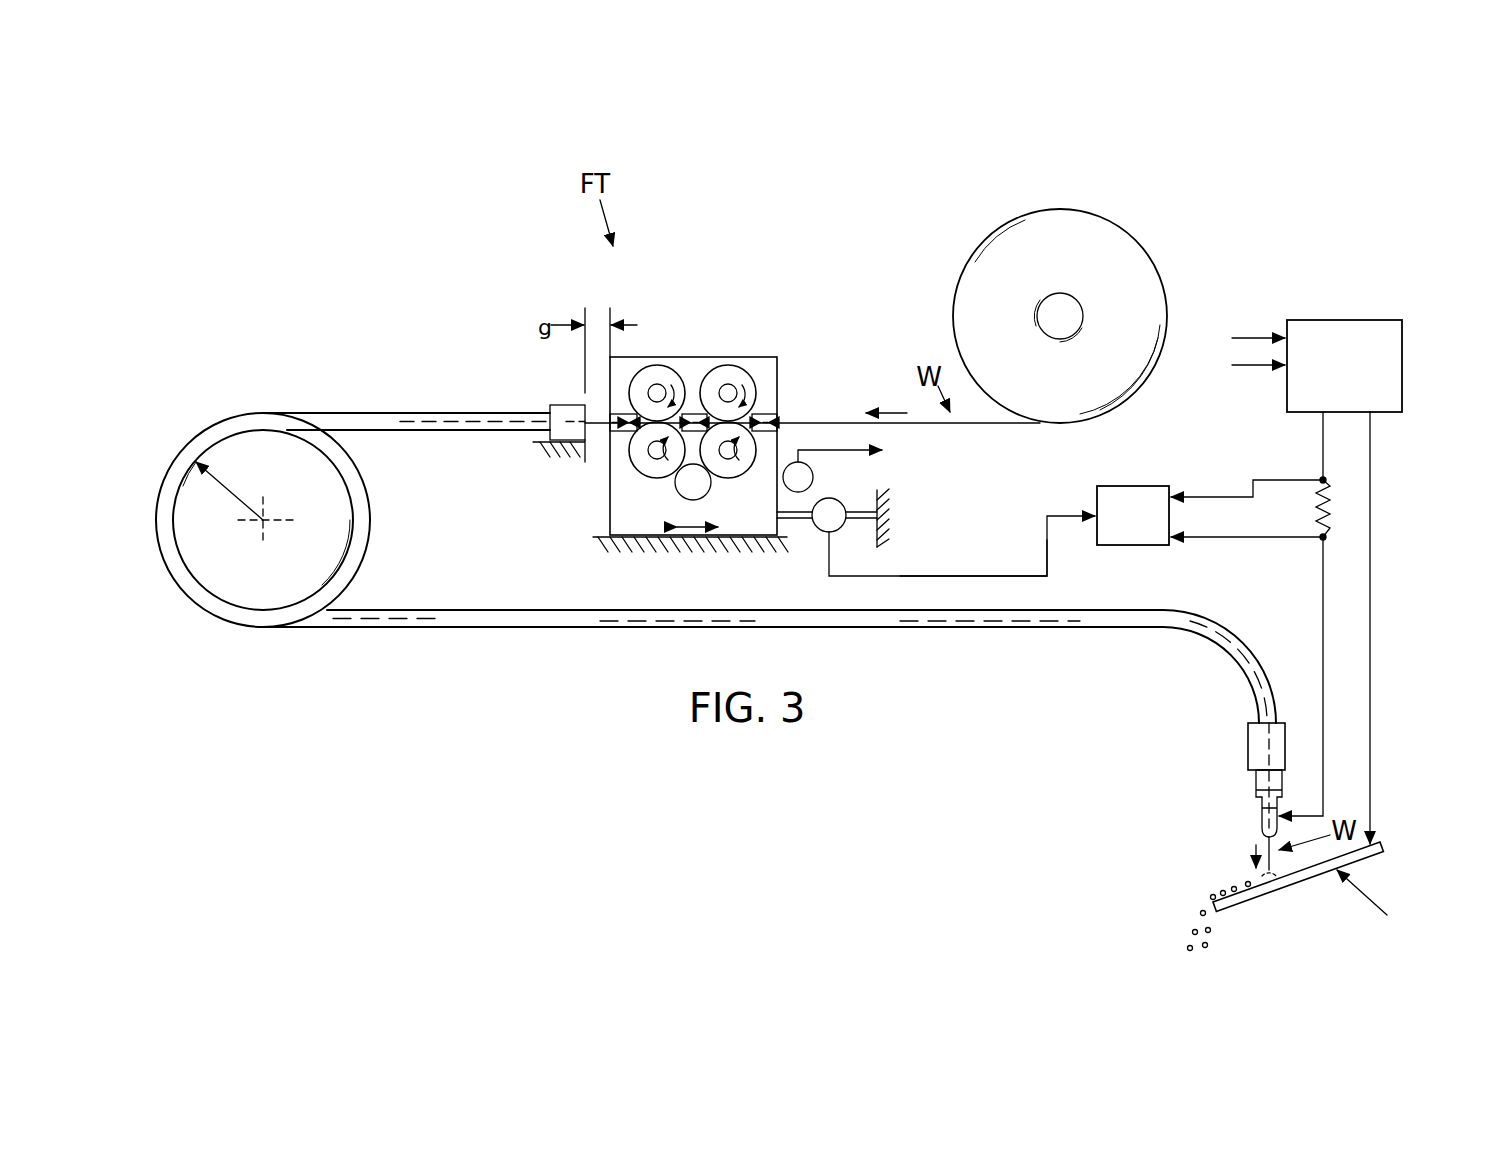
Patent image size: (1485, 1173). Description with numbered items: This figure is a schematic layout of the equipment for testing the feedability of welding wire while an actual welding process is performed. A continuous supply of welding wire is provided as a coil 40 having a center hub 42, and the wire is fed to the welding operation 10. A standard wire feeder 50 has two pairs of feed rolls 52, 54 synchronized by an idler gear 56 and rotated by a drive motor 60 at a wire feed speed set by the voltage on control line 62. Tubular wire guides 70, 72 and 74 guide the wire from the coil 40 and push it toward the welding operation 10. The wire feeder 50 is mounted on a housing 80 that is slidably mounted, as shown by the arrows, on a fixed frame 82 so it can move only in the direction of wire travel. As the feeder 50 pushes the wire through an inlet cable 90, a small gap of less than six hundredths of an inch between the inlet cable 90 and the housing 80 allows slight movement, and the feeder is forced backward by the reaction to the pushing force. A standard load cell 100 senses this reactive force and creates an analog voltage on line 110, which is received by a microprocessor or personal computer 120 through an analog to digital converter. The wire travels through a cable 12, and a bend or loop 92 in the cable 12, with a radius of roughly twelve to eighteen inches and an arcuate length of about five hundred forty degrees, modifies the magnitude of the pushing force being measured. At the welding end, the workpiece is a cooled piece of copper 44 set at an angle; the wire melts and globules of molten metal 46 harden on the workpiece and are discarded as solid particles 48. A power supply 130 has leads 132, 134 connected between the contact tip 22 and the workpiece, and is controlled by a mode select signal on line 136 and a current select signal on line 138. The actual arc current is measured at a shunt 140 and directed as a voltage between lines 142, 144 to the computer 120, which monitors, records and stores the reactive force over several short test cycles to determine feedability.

The welding operation 10 is at (1220, 756).
The cable 12 is at (960, 628).
The contact tip 22 is at (1263, 817).
The coil 40 is at (1133, 237).
The center hub 42 is at (1055, 296).
The cooled piece of copper 44 is at (1290, 888).
The globules of molten metal 46 is at (1223, 888).
The spatter droplets 48 is at (1188, 950).
The wire feeder 50 is at (707, 357).
The feed rolls 52 is at (655, 377).
The feed rolls 54 is at (641, 465).
The idler gear 56 is at (690, 492).
The drive motor 60 is at (827, 500).
The control line 62 is at (823, 450).
The tubular wire guide 70 is at (765, 413).
The tubular wire guide 72 is at (692, 413).
The tubular wire guide 74 is at (613, 413).
The housing 80 is at (612, 510).
The fixed frame 82 is at (670, 540).
The inlet cable 90 is at (552, 402).
The bend or loop 92 is at (223, 420).
The load cell 100 is at (820, 533).
The line 110 is at (1050, 557).
The microprocessor or personal computer 120 is at (1133, 486).
The power supply 130 is at (1353, 320).
The lead 132 is at (1325, 583).
The lead 134 is at (1372, 710).
The line 136 is at (1250, 338).
The line 138 is at (1247, 367).
The shunt 140 is at (1330, 505).
The line 142 is at (1230, 498).
The line 144 is at (1272, 537).